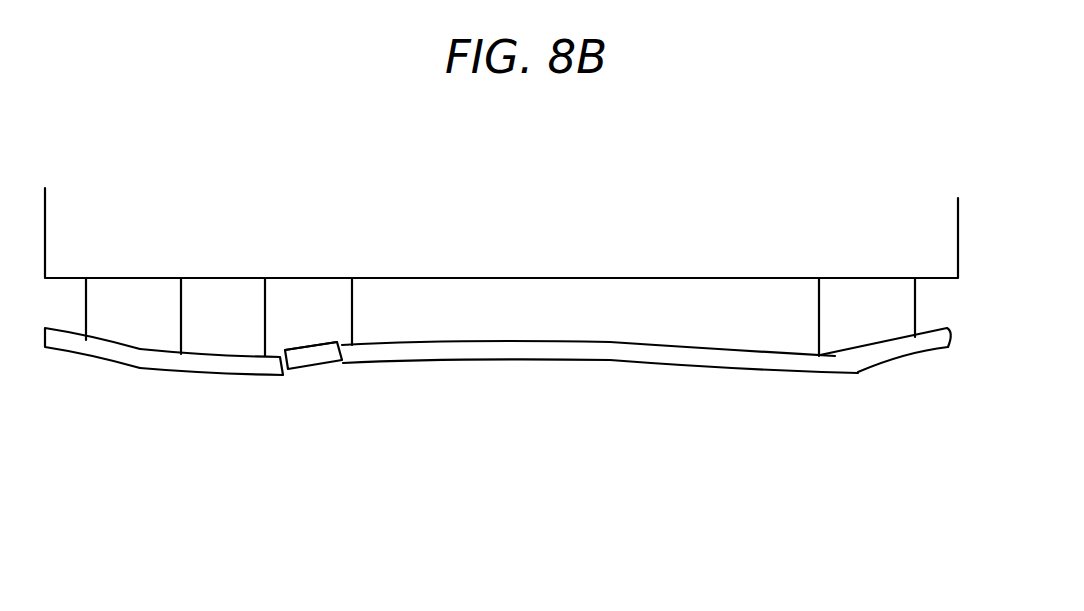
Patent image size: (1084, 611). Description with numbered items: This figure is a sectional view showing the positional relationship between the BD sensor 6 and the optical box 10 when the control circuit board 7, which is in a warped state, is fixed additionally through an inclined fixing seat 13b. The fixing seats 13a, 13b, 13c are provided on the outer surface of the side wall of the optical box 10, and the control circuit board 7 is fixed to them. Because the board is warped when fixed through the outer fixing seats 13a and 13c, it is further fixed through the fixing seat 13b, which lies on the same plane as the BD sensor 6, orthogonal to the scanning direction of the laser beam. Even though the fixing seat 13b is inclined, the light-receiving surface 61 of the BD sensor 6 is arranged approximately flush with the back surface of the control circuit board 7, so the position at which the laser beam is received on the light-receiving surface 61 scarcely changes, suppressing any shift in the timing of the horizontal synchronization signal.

The optical box 10 is at (698, 242).
The control circuit board 7 is at (588, 350).
The BD sensor 6 is at (320, 357).
The light-receiving surface 61 is at (311, 345).
The fixing seat 13a is at (138, 348).
The fixing seat 13b is at (278, 363).
The fixing seat 13c is at (855, 357).